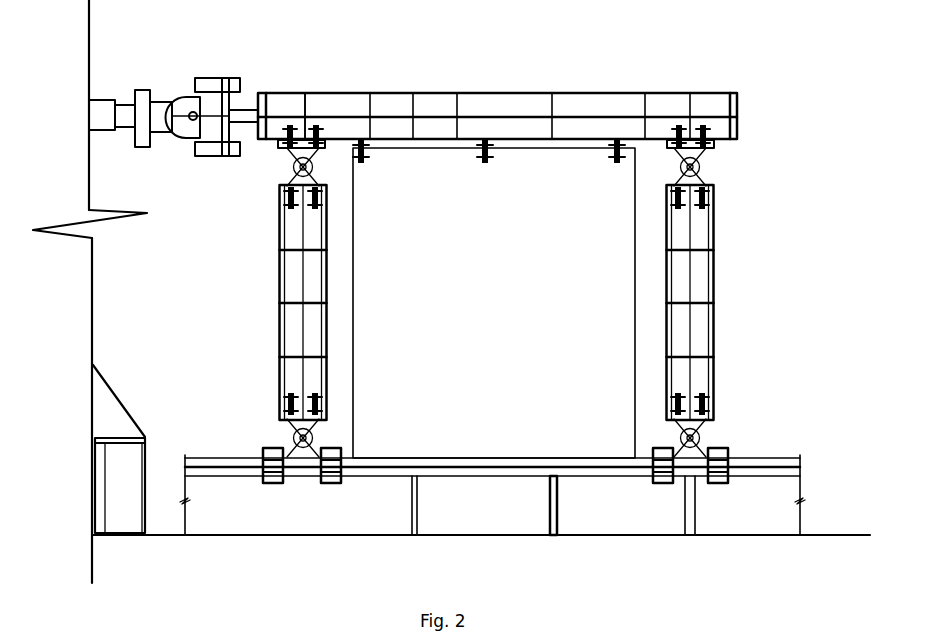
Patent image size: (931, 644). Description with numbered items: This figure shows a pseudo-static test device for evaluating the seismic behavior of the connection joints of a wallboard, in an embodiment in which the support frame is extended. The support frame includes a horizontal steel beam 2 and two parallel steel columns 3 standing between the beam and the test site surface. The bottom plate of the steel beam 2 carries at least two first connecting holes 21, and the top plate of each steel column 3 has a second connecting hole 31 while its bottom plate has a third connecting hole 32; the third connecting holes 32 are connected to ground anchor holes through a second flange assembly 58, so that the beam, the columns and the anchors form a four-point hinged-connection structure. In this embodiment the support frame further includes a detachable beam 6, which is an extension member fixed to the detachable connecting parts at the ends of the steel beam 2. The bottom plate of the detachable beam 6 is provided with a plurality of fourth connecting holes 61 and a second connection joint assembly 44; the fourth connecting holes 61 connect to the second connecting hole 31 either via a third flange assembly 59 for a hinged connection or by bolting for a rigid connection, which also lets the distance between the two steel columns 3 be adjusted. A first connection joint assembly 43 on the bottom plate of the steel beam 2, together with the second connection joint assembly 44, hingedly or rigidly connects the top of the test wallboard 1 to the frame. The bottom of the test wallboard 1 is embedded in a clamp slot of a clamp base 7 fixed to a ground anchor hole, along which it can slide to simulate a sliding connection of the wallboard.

The test wallboard 1 is at (538, 177).
The steel beam 2 is at (440, 92).
The steel columns 3 is at (280, 300).
The detachable beam 6 is at (313, 92).
The clamp base 7 is at (449, 458).
The first connecting holes 21 is at (707, 120).
The second connecting hole 31 is at (714, 192).
The third connecting hole 32 is at (714, 403).
The first connection joint assembly 43 is at (617, 138).
The second connection joint assembly 44 is at (361, 160).
The second flange assembly 58 is at (286, 430).
The third flange assembly 59 is at (290, 155).
The fourth connecting holes 61 is at (280, 128).